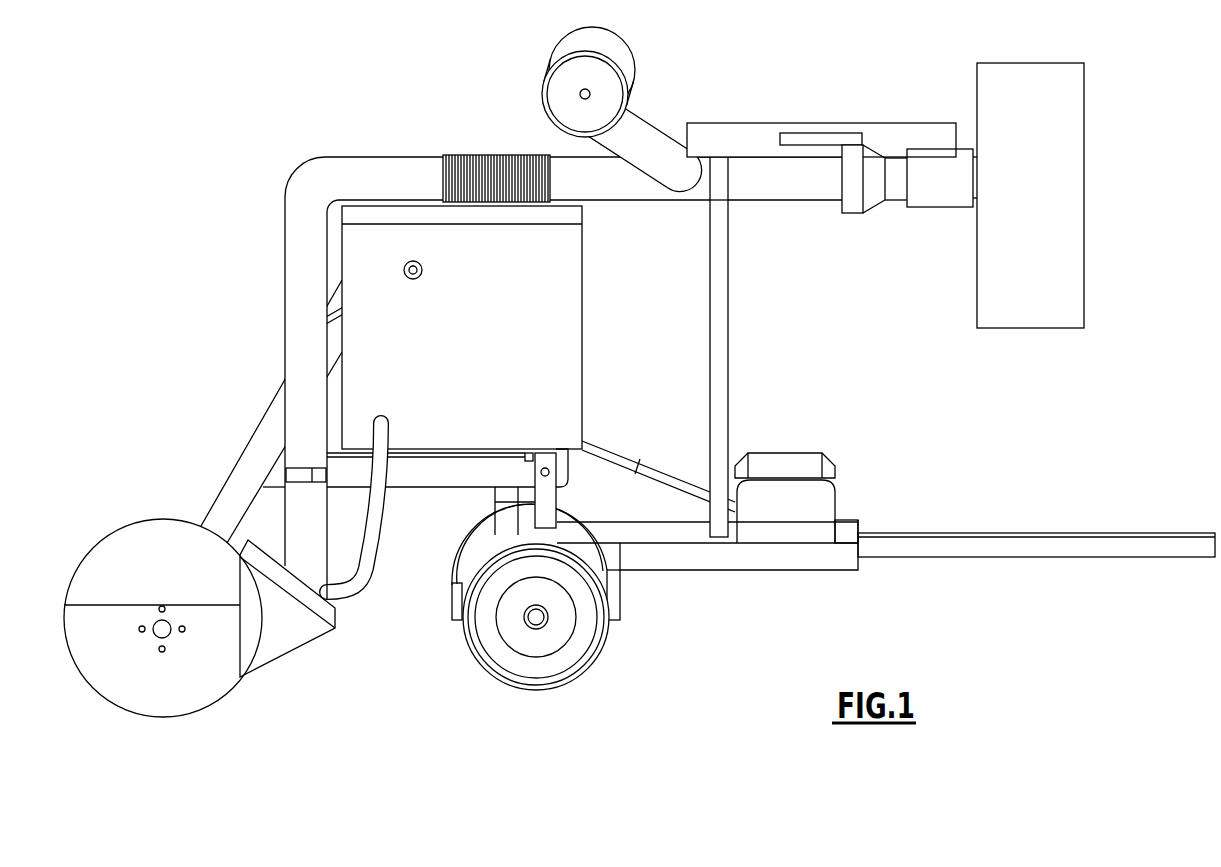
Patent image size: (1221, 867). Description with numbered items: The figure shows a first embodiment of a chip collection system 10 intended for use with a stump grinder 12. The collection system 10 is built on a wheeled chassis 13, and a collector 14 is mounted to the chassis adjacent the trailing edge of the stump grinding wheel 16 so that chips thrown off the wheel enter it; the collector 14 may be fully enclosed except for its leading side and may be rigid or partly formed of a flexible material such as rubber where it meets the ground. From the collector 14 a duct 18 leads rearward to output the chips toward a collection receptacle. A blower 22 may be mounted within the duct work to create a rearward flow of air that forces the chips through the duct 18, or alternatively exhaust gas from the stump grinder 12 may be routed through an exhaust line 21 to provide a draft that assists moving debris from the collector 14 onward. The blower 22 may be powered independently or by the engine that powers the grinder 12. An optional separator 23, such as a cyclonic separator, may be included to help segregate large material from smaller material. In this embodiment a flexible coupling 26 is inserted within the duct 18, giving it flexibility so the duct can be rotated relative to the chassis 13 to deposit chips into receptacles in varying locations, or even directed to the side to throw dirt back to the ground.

The chip collection system 10 is at (242, 353).
The stump grinder 12 is at (476, 352).
The wheeled chassis 13 is at (441, 483).
The collector 14 is at (302, 641).
The stump grinding wheel 16 is at (202, 697).
The duct 18 is at (278, 91).
The exhaust line 21 is at (371, 564).
The blower 22 is at (557, 46).
The separator 23 is at (1042, 210).
The flexible coupling 26 is at (491, 155).